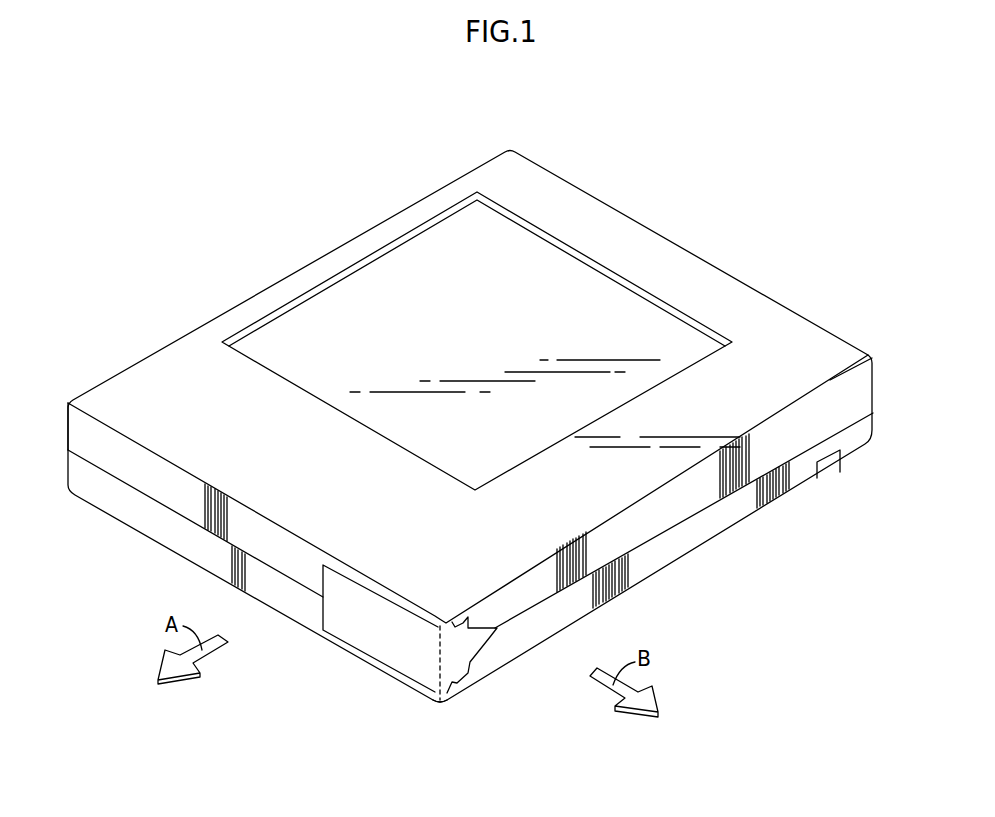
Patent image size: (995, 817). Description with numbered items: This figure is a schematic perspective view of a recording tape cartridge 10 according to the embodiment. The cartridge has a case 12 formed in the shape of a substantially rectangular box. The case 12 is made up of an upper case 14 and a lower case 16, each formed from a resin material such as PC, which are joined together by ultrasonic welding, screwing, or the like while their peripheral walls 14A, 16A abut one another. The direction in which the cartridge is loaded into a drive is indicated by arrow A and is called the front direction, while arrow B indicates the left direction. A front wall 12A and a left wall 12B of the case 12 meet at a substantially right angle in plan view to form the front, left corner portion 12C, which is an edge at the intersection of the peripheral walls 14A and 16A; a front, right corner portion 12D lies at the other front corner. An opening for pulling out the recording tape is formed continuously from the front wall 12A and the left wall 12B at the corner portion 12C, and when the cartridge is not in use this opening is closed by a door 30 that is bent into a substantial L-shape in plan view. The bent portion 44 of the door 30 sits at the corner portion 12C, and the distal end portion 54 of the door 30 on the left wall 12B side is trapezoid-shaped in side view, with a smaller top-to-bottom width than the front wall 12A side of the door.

The recording tape cartridge 10 is at (598, 120).
The case 12 is at (722, 265).
The front wall 12A is at (297, 600).
The left wall 12B is at (637, 573).
The front, left corner portion 12C is at (440, 705).
The front, right corner portion 12D is at (68, 402).
The upper case 14 is at (214, 362).
The peripheral wall of upper case 14A is at (848, 407).
The lower case 16 is at (707, 551).
The peripheral wall of lower case 16A is at (855, 448).
The door 30 is at (400, 647).
The bent portion 44 is at (438, 662).
The distal end portion 54 is at (492, 635).